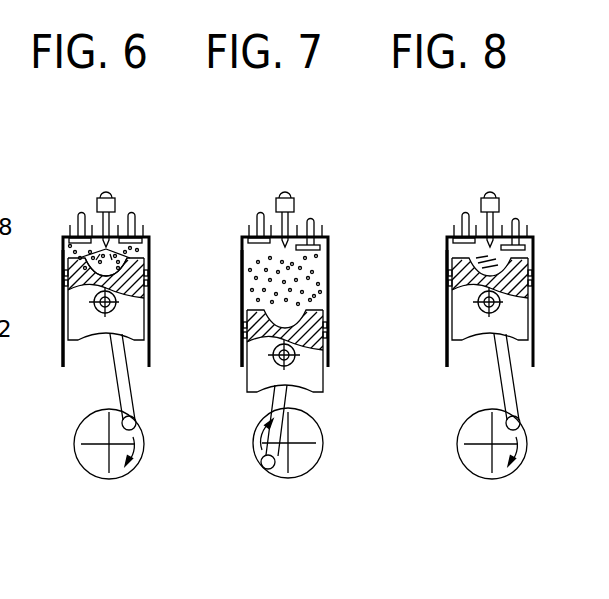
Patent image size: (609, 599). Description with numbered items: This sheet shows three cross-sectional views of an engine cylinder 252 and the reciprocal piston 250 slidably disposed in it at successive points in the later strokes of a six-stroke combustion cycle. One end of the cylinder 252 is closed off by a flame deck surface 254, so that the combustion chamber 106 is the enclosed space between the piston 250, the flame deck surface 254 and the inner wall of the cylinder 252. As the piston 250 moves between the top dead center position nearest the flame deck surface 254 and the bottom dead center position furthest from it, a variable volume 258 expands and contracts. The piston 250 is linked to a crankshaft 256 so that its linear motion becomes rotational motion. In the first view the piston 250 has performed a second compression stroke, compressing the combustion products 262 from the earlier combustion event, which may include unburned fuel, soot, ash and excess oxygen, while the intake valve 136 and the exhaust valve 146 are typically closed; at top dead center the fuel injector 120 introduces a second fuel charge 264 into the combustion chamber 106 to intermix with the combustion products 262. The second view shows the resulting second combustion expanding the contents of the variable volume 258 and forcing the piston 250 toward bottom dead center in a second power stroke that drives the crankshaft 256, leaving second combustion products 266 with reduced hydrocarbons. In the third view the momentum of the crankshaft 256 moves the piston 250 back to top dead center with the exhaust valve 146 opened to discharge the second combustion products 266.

In FIG. 6, the combustion chamber 106 is at (83, 183).
In FIG. 7, the combustion chamber 106 is at (258, 184).
In FIG. 8, the combustion chamber 106 is at (463, 183).
In FIG. 6, the fuel injector 120 is at (104, 196).
In FIG. 7, the fuel injector 120 is at (283, 196).
In FIG. 8, the fuel injector 120 is at (488, 195).
In FIG. 6, the intake valve 136 is at (78, 222).
In FIG. 6, the exhaust valve 146 is at (123, 240).
In FIG. 7, the exhaust valve 146 is at (300, 242).
In FIG. 8, the exhaust valve 146 is at (505, 240).
In FIG. 6, the flame deck surface 254 is at (131, 240).
In FIG. 7, the flame deck surface 254 is at (318, 244).
In FIG. 8, the flame deck surface 254 is at (520, 244).
In FIG. 6, the variable volume 258 is at (128, 248).
In FIG. 7, the variable volume 258 is at (304, 279).
In FIG. 8, the variable volume 258 is at (490, 266).
In FIG. 6, the second fuel charge 264 is at (72, 244).
In FIG. 6, the cylinder 252 is at (63, 300).
In FIG. 7, the cylinder 252 is at (241, 298).
In FIG. 8, the cylinder 252 is at (447, 300).
In FIG. 6, the piston 250 is at (80, 333).
In FIG. 7, the piston 250 is at (255, 373).
In FIG. 8, the piston 250 is at (465, 333).
In FIG. 6, the combustion products 262 is at (128, 257).
In FIG. 7, the second combustion products 266 is at (304, 302).
In FIG. 6, the crankshaft 256 is at (95, 458).
In FIG. 7, the crankshaft 256 is at (283, 468).
In FIG. 8, the crankshaft 256 is at (478, 458).